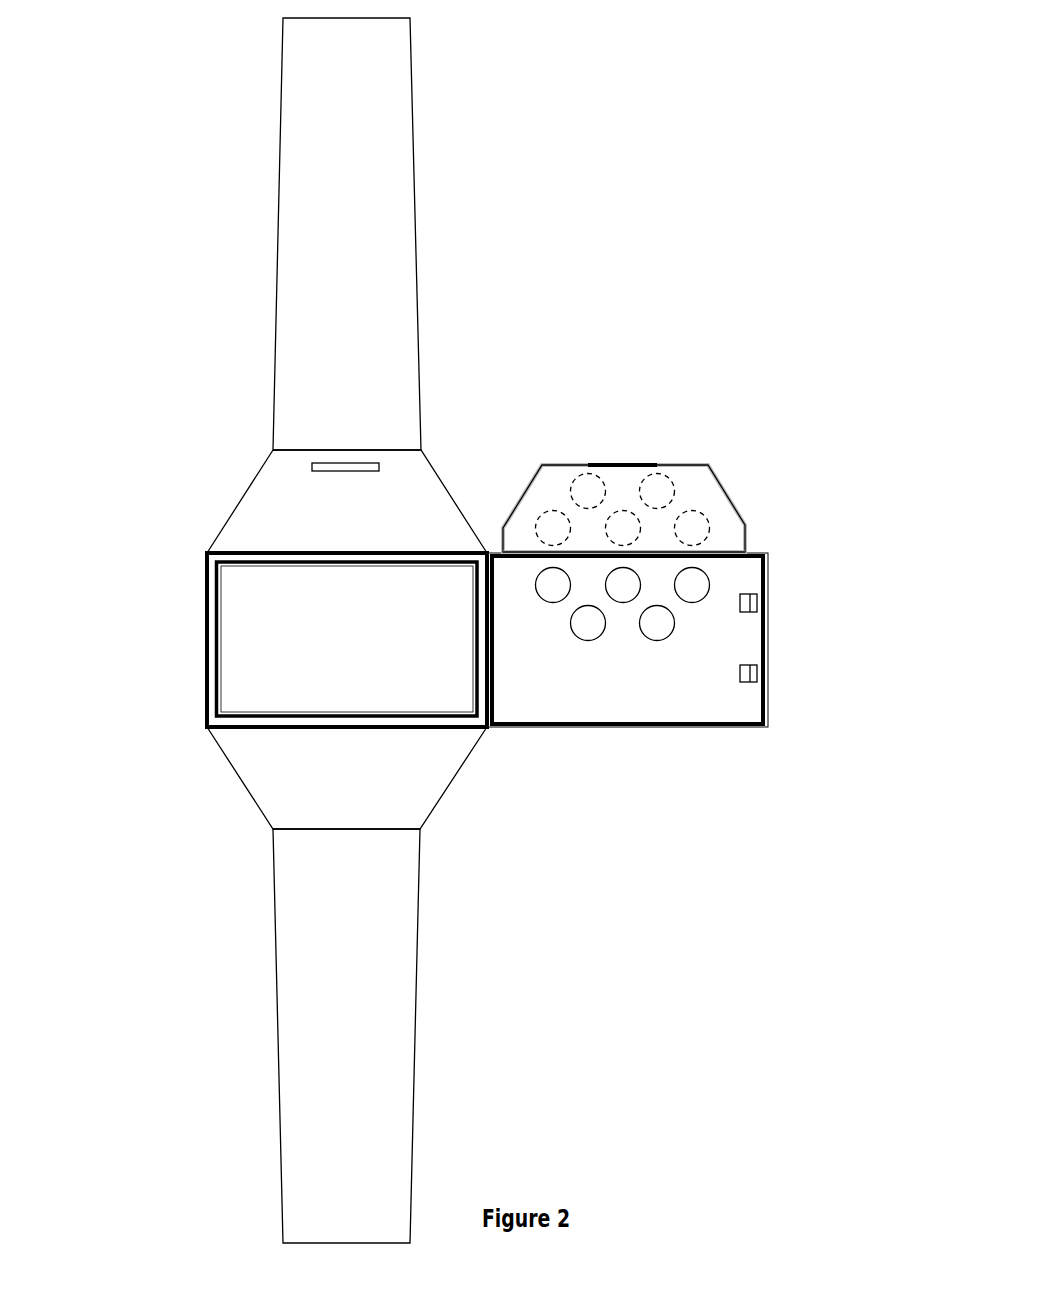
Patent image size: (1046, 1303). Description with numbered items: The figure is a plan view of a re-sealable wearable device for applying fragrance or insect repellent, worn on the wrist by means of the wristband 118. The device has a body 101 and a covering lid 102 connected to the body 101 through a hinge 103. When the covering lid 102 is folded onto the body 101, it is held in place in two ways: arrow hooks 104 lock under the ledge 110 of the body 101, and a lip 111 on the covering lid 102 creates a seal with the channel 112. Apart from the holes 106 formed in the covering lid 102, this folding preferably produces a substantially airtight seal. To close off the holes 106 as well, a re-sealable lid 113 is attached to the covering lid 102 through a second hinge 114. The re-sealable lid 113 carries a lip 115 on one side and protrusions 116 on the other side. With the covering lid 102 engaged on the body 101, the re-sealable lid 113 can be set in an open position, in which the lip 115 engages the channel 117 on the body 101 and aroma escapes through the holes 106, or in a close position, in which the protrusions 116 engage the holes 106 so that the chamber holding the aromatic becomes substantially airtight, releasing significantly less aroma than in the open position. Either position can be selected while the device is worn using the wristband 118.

The body 101 is at (272, 626).
The covering lid 102 is at (628, 663).
The hinge 103 is at (628, 696).
The arrow hook 104 is at (822, 678).
The holes 106 is at (713, 601).
The ledge 110 is at (265, 611).
The lip 111 is at (763, 623).
The channel 112 is at (418, 722).
The re-sealable lid 113 is at (707, 479).
The hinge 114 is at (702, 530).
The lip 115 is at (728, 417).
The protrusions 116 is at (720, 495).
The channel 117 is at (464, 421).
The wristband 118 is at (458, 630).